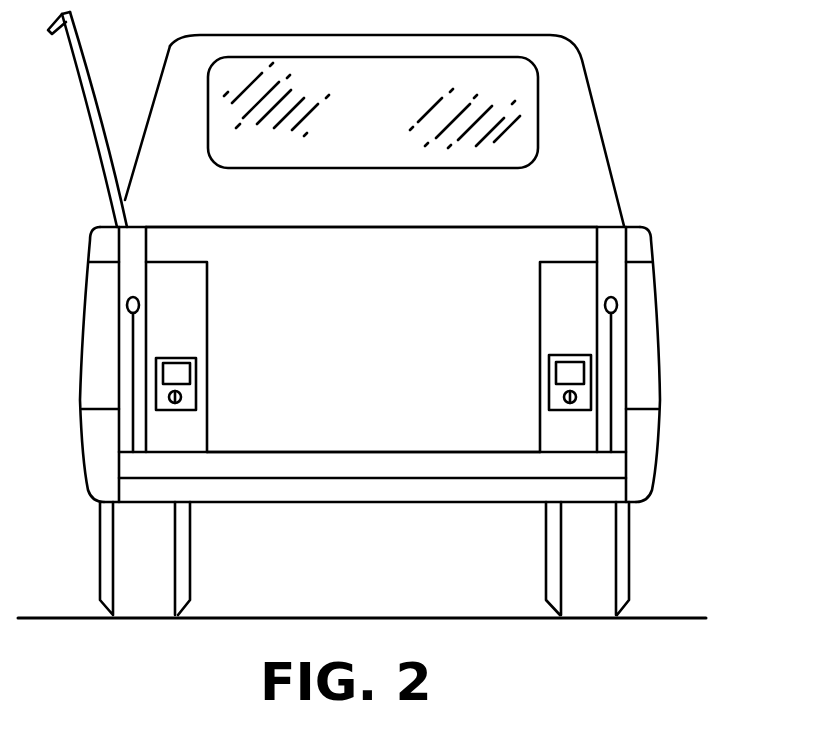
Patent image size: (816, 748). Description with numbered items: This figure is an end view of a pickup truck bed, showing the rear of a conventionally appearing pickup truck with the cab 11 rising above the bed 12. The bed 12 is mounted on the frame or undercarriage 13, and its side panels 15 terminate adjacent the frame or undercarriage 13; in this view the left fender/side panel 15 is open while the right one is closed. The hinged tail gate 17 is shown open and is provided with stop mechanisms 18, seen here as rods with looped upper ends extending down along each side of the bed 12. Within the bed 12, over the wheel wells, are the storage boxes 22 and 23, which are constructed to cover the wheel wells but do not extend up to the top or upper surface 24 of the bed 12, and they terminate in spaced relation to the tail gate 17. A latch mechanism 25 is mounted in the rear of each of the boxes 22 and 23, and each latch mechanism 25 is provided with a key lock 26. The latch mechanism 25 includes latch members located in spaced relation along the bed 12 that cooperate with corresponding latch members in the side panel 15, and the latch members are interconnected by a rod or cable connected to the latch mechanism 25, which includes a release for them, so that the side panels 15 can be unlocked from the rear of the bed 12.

The cab 11 is at (583, 199).
The bed 12 is at (392, 285).
The frame or undercarriage 13 is at (90, 472).
The side panel 15 is at (84, 52).
The tail gate 17 is at (358, 452).
The stop mechanism 18 is at (130, 336).
The box 22 is at (207, 292).
The box 23 is at (540, 291).
The top or upper surface 24 is at (184, 227).
The latch mechanism 25 is at (178, 373).
The key lock 26 is at (181, 397).